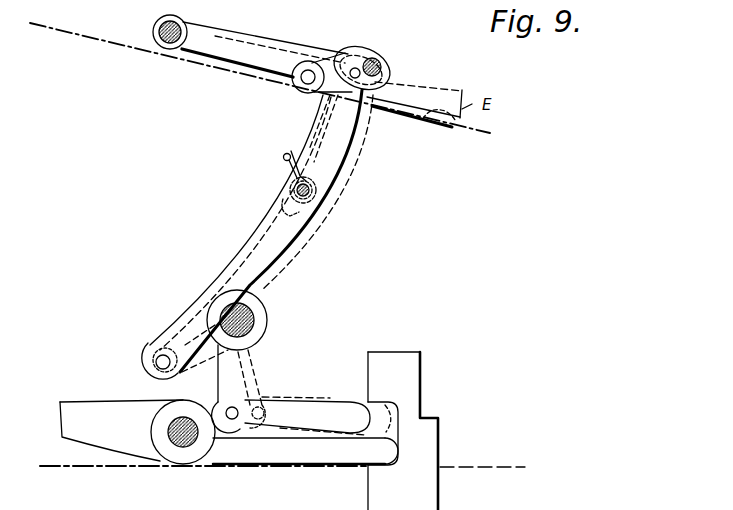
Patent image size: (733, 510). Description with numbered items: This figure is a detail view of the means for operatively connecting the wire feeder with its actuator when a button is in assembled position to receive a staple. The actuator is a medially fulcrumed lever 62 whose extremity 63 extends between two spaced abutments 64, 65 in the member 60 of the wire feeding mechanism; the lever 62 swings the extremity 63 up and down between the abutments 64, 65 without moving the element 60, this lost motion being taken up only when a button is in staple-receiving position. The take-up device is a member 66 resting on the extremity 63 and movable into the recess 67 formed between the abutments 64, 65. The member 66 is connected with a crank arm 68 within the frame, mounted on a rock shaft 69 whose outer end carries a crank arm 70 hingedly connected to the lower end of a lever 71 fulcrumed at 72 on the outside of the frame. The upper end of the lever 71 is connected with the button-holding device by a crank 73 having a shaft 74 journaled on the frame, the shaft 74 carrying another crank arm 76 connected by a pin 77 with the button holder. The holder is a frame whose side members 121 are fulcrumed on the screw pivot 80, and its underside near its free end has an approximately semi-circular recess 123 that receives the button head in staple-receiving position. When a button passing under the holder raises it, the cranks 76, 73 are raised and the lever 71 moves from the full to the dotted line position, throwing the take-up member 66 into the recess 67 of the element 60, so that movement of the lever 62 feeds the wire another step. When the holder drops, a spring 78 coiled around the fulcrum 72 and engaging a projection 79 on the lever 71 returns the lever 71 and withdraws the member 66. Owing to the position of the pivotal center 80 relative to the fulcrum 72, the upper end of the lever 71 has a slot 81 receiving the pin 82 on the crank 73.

The member of the wire feeding mechanism 60 is at (433, 440).
The medially fulcrumed lever 62 is at (133, 437).
The extremity of the lever 63 is at (365, 455).
The abutment 64 is at (378, 466).
The abutment 65 is at (385, 404).
The lost motion take-up member 66 is at (323, 408).
The recess 67 is at (392, 430).
The crank arm 68 is at (257, 373).
The rock shaft 69 is at (258, 320).
The crank arm 70 is at (160, 360).
The lever 71 is at (277, 241).
The fulcrum 72 is at (320, 192).
The crank 73 is at (325, 90).
The shaft 74 is at (300, 86).
The crank arm 76 is at (338, 100).
The pin 77 is at (352, 62).
The spring 78 is at (293, 168).
The projection 79 is at (285, 208).
The pivotal center 80 is at (170, 50).
The slot 81 is at (381, 68).
The pin 82 is at (368, 99).
The side members 121 is at (258, 47).
The semi-circular recess 123 is at (433, 123).